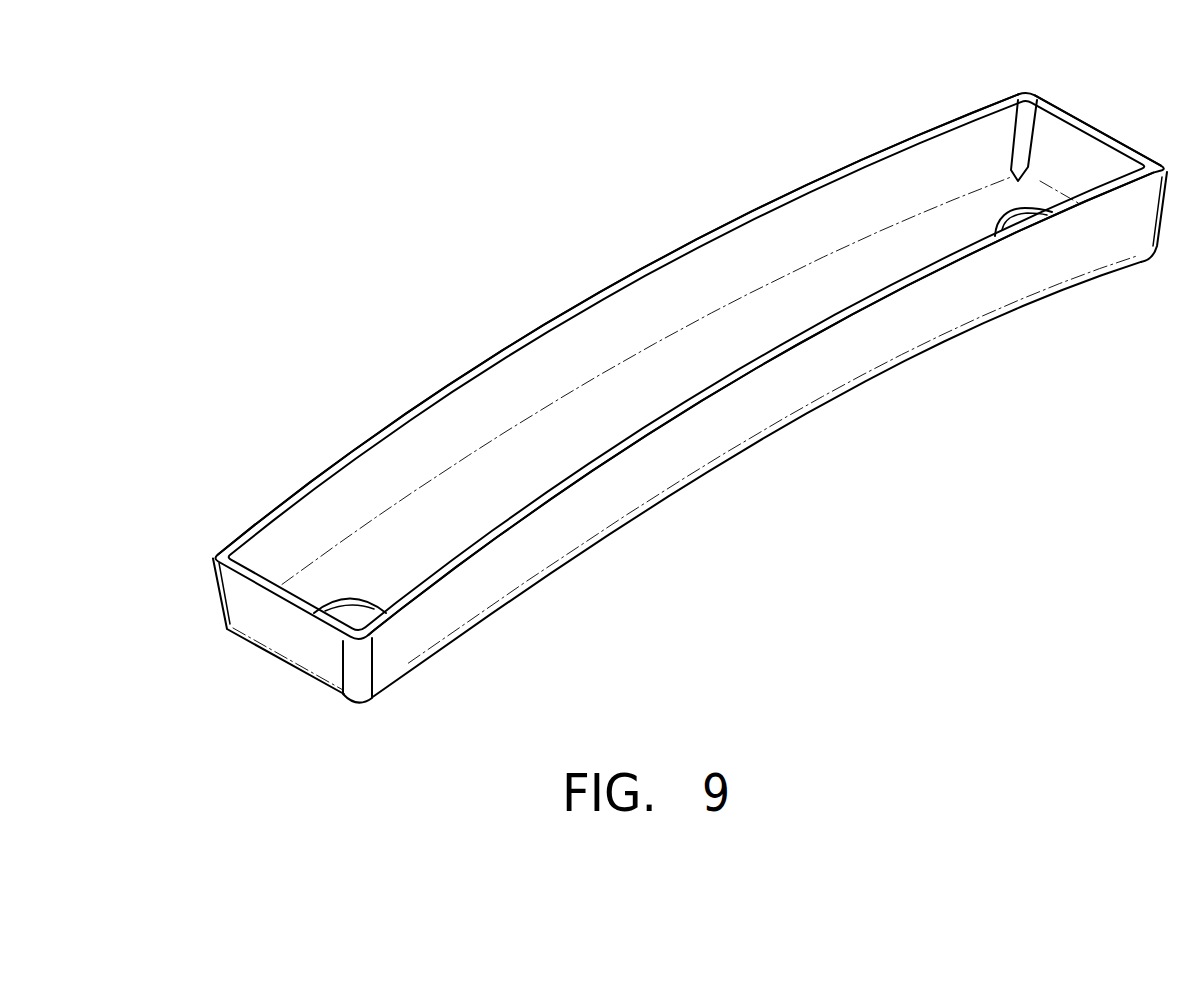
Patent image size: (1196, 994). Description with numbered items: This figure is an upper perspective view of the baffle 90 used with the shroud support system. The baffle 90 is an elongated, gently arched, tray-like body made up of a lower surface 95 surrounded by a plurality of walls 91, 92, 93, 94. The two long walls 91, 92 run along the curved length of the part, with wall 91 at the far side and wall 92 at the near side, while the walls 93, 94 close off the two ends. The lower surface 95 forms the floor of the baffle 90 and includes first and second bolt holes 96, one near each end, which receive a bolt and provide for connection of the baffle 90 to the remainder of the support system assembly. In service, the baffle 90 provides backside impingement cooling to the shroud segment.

The baffle 90 is at (500, 237).
The wall 91 is at (490, 357).
The wall 92 is at (657, 460).
The wall 93 is at (273, 625).
The wall 94 is at (1103, 133).
The lower surface 95 is at (741, 355).
The bolt holes 96 is at (350, 605).